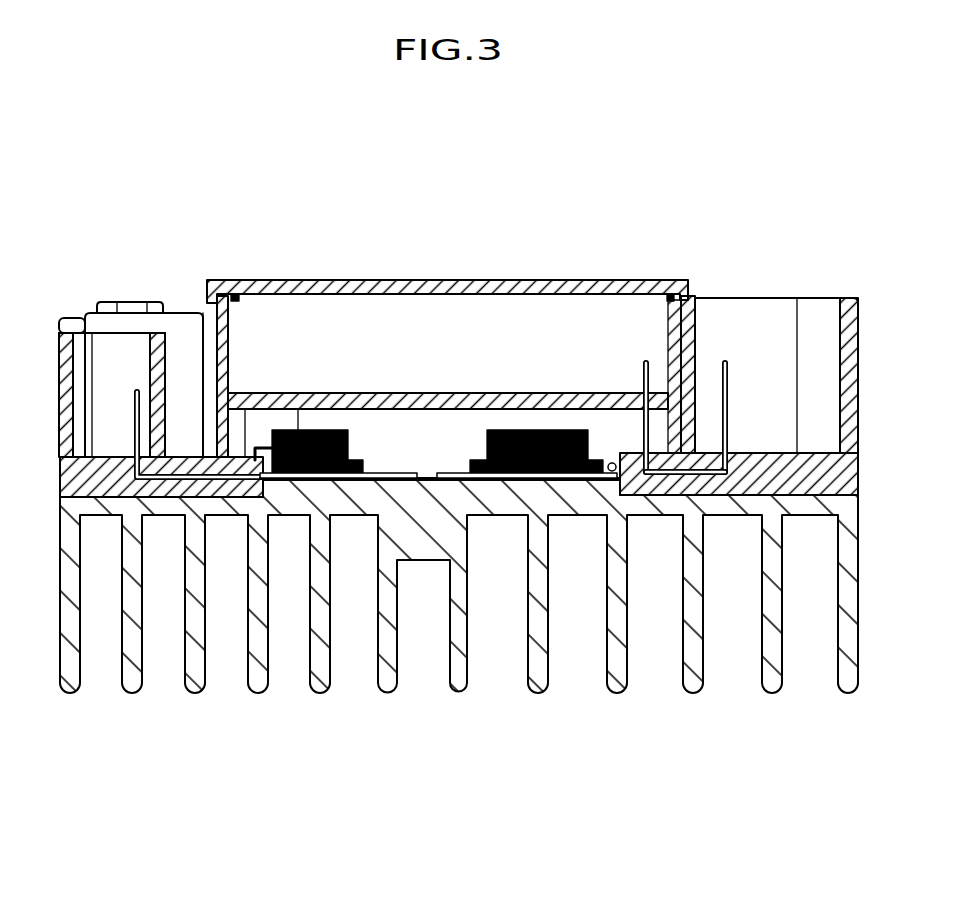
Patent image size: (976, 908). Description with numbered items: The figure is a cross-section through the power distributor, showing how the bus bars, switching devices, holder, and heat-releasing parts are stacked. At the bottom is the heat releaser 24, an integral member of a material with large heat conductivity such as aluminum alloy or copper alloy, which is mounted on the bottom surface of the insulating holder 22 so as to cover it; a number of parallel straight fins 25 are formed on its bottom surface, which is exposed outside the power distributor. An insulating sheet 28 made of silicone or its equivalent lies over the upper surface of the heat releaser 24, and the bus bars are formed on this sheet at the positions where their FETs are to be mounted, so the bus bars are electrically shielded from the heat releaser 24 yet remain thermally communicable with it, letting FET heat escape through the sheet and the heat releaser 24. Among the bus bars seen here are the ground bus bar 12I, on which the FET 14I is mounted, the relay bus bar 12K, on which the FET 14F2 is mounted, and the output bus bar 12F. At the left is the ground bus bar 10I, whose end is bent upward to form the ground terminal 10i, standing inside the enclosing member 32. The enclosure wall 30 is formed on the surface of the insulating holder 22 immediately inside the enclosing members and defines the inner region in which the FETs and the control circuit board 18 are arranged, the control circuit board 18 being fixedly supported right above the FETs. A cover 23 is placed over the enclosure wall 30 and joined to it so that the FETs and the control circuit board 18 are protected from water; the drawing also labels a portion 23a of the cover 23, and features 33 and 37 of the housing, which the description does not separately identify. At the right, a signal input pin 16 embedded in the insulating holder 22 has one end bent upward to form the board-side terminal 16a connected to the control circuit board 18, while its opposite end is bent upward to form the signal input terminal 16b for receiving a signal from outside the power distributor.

The ground terminal 10i is at (137, 390).
The ground bus bar 10I is at (180, 453).
The ground bus bar 12I is at (383, 473).
The output bus bar 12F is at (453, 474).
The relay bus bar 12K is at (600, 463).
The FET 14I is at (329, 433).
The FET 14F2 is at (533, 428).
The signal input pin 16 is at (725, 351).
The board-side terminal 16a is at (649, 363).
The signal input terminal 16b is at (726, 363).
The control circuit board 18 is at (453, 391).
The insulating holder 22 is at (845, 473).
The cover 23 is at (441, 279).
The cover projection 23a is at (235, 301).
The heat releaser 24 is at (459, 622).
The fins 25 is at (199, 692).
The insulating sheet 28 is at (569, 479).
The enclosure wall 30 is at (229, 349).
The enclosing member 32 is at (73, 323).
The case side wall 33 is at (58, 382).
The case side wall 37 is at (846, 298).